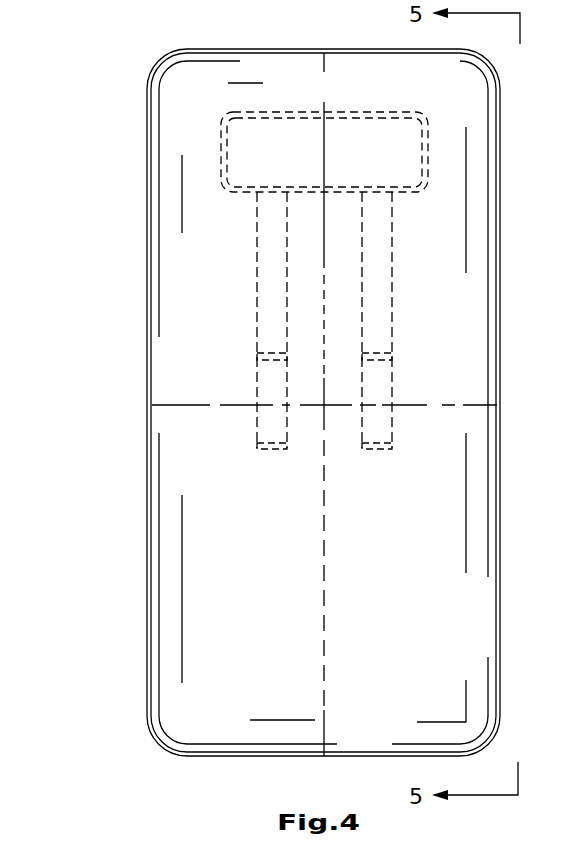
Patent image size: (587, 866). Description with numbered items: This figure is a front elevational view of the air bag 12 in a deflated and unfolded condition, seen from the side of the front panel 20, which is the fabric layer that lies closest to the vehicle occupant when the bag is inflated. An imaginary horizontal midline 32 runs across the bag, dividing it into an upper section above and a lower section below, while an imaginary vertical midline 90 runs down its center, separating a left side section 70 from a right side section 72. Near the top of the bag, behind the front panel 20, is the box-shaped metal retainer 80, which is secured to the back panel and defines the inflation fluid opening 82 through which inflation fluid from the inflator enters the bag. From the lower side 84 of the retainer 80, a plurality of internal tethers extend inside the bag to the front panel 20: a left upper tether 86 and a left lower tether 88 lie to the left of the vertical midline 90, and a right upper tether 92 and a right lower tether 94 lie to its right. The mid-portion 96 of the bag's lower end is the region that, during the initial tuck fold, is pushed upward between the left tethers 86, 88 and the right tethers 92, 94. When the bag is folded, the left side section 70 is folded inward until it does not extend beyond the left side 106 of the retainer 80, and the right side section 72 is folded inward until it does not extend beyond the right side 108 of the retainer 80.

The air bag 12 is at (98, 128).
The front panel 20 is at (230, 578).
The imaginary horizontal midline 32 is at (425, 407).
The left side section 70 is at (142, 532).
The right side section 72 is at (510, 597).
The retainer 80 is at (352, 100).
The inflation fluid opening 82 is at (398, 148).
The lower side of the retainer 84 is at (312, 190).
The left upper tether 86 is at (272, 290).
The left lower tether 88 is at (272, 388).
The imaginary vertical midline 90 is at (323, 630).
The right upper tether 92 is at (380, 285).
The right lower tether 94 is at (380, 387).
The mid-portion of the air bag lower end portion 96 is at (345, 757).
The left side of the retainer 106 is at (222, 158).
The right side of the retainer 108 is at (428, 162).